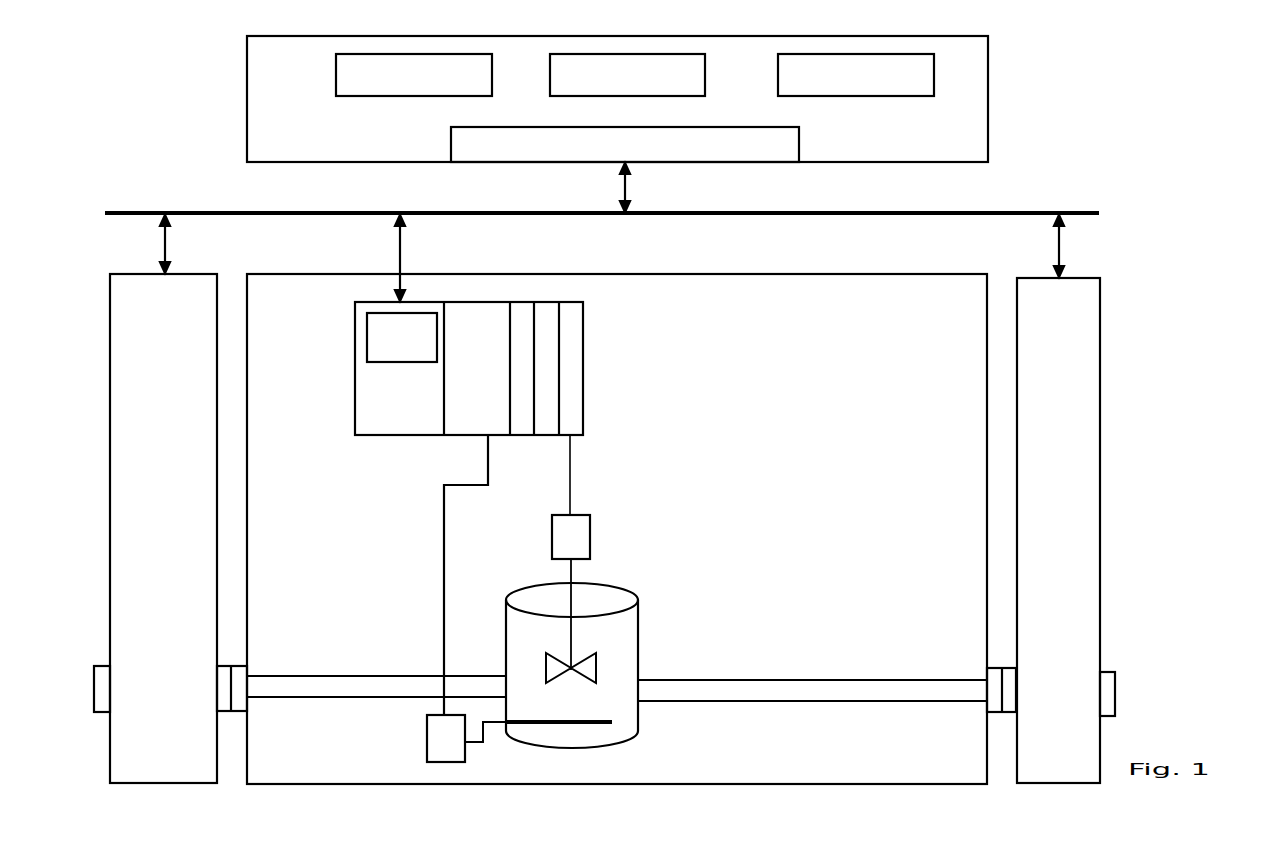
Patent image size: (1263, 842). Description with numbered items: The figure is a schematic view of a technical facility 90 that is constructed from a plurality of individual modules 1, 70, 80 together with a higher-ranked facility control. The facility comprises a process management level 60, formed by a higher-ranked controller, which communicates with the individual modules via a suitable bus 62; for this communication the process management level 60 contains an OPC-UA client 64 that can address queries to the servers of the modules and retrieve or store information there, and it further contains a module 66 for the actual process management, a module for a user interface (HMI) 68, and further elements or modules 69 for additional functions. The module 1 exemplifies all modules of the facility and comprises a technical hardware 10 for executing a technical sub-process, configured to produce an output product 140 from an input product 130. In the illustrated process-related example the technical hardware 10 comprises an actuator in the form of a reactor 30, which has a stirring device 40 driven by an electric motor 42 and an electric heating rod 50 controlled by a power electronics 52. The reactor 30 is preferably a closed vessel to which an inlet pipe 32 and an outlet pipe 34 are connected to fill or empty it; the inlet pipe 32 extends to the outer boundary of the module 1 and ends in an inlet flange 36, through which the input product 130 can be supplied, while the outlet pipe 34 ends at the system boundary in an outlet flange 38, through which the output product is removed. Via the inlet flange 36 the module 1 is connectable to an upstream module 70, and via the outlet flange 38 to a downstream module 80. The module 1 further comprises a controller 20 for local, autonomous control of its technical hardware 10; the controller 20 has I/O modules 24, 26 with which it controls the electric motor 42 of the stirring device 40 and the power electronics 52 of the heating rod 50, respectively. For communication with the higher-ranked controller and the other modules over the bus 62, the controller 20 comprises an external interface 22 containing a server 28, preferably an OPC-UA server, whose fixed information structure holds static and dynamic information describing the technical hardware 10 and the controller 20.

The module 1 is at (921, 315).
The technical hardware 10 is at (690, 537).
The controller 20 is at (469, 352).
The external interface 22 is at (392, 403).
The I/O module 24 is at (547, 394).
The I/O module 26 is at (577, 418).
The server 28 is at (392, 348).
The reactor 30 is at (628, 666).
The inlet pipe 32 is at (333, 688).
The outlet pipe 34 is at (790, 690).
The inlet flange 36 is at (243, 676).
The outlet flange 38 is at (990, 680).
The stirring device 40 is at (596, 655).
The electric motor 42 is at (580, 527).
The electric heating rod 50 is at (612, 723).
The power electronics 52 is at (441, 730).
The process management level 60 is at (266, 67).
The bus 62 is at (737, 212).
The OPC-UA client 64 is at (614, 154).
The module for process management 66 is at (401, 83).
The user interface module 68 is at (614, 83).
The further elements or modules 69 is at (852, 83).
The upstream module 70 is at (146, 322).
The downstream module 80 is at (1042, 322).
The technical facility 90 is at (1043, 141).
The input product 130 is at (248, 685).
The output product 140 is at (987, 690).